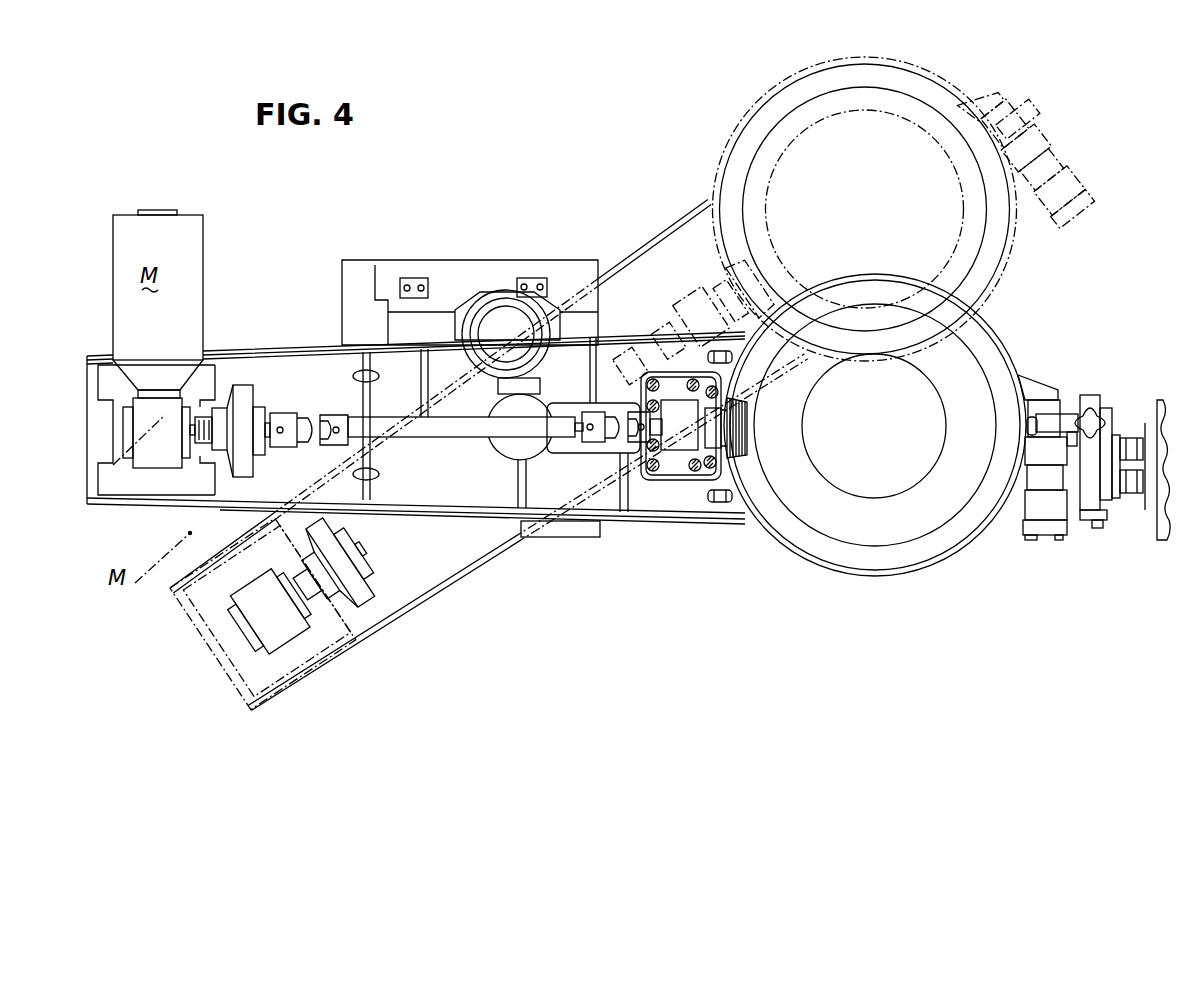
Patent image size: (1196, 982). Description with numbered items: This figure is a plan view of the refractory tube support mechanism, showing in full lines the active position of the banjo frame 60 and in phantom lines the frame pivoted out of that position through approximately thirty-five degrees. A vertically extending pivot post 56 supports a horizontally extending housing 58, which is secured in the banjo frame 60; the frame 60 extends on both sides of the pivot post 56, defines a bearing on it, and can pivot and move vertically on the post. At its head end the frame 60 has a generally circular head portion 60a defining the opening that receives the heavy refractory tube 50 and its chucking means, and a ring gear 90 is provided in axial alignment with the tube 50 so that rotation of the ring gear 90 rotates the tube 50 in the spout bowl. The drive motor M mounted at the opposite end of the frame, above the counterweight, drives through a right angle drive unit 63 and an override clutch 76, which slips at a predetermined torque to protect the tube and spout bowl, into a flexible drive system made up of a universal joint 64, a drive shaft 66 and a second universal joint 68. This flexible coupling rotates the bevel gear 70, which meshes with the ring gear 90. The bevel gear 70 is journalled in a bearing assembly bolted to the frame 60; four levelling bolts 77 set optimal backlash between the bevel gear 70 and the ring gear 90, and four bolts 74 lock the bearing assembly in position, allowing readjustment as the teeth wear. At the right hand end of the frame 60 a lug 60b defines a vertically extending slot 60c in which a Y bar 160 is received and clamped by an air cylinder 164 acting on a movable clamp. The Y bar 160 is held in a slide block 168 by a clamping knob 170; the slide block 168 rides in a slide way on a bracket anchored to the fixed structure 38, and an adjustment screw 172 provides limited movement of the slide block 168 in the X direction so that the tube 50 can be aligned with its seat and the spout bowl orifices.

The fixed structure 38 is at (1150, 405).
The refractory tube 50 is at (883, 505).
The pivot post 56 is at (504, 335).
The housing 58 is at (262, 350).
The banjo frame 60 is at (668, 252).
The circular head portion 60a is at (888, 576).
The lug 60b is at (1040, 388).
The slot 60c is at (1007, 108).
The right angle drive unit 63 is at (162, 443).
The universal joint 64 is at (287, 428).
The drive shaft 66 is at (427, 440).
The universal joint 68 is at (595, 438).
The bevel gear 70 is at (745, 424).
The bolts 74 is at (692, 380).
The override clutch 76 is at (241, 392).
The levelling bolts 77 is at (647, 382).
The ring gear 90 is at (785, 516).
The Y bar 160 is at (1052, 423).
The air cylinder 164 is at (1050, 527).
The slide block 168 is at (1138, 492).
The knob 170 is at (1092, 418).
The adjustment screw 172 is at (1097, 528).